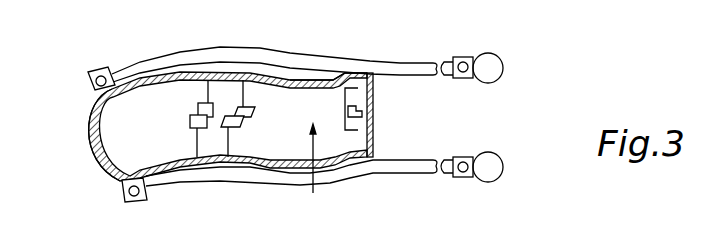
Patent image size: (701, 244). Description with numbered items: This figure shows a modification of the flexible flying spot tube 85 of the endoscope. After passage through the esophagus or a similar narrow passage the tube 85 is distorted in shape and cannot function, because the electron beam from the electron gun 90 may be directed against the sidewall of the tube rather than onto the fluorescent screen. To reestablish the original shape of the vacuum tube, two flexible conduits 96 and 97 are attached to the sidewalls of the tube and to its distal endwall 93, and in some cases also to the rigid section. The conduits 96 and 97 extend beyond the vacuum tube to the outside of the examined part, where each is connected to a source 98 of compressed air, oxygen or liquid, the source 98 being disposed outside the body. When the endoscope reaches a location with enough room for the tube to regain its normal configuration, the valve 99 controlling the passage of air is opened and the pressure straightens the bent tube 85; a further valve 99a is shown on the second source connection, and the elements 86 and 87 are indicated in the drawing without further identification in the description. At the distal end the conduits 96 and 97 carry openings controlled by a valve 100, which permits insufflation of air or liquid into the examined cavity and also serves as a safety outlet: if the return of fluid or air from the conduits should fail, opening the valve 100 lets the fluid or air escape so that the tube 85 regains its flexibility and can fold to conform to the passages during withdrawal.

The tube 85 is at (320, 169).
The inner liner 86 is at (118, 92).
The outer wall 87 is at (310, 80).
The electron gun 90 is at (372, 120).
The distal endwall 93 is at (88, 137).
The flexible conduit 96 is at (207, 52).
The flexible conduit 97 is at (227, 177).
The source of compressed air, oxygen or liquid 98 is at (490, 70).
The valve 99 is at (465, 62).
The valve 99a is at (462, 178).
The valve 100 is at (97, 73).